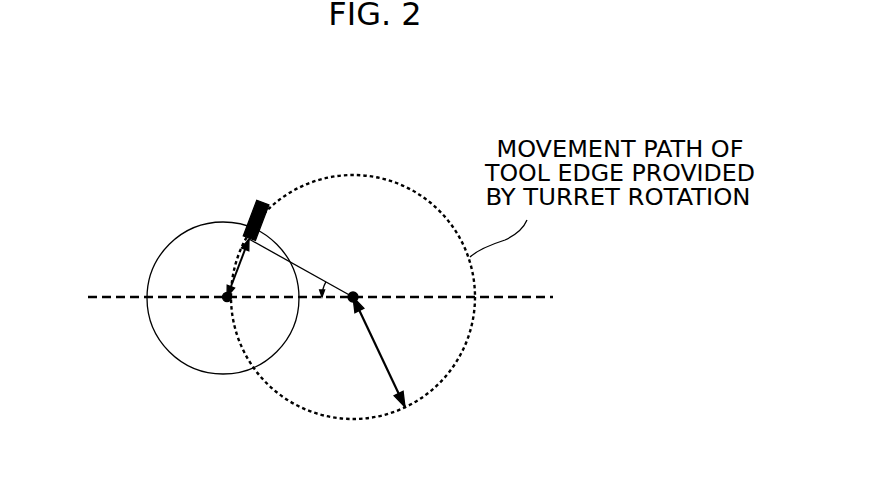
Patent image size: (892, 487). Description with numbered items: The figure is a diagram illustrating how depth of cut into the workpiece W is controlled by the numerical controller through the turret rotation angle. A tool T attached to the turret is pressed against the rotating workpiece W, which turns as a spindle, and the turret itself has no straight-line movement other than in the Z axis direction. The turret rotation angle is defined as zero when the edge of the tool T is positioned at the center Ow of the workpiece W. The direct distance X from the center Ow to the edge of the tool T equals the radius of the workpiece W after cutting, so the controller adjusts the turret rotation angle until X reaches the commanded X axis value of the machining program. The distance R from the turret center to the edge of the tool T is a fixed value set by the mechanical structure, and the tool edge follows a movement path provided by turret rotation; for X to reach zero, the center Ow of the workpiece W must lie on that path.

The tool T is at (253, 205).
The workpiece W is at (173, 275).
The center of the workpiece Ow is at (225, 300).
The direct distance from the center of the workpiece to the edge of the tool X is at (240, 268).
The distance from center of the turret to the edge of the tool R is at (387, 368).